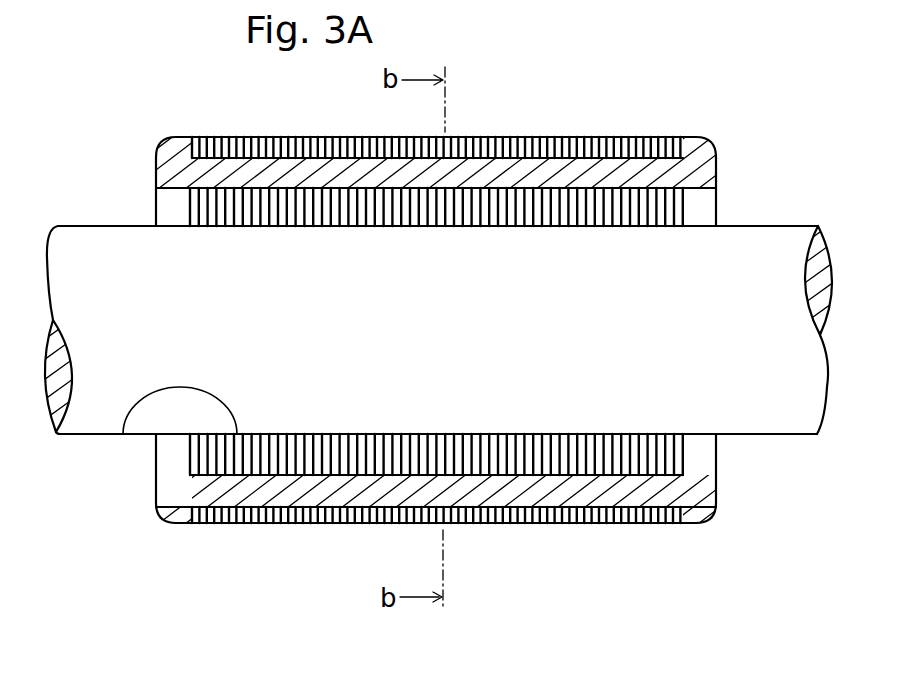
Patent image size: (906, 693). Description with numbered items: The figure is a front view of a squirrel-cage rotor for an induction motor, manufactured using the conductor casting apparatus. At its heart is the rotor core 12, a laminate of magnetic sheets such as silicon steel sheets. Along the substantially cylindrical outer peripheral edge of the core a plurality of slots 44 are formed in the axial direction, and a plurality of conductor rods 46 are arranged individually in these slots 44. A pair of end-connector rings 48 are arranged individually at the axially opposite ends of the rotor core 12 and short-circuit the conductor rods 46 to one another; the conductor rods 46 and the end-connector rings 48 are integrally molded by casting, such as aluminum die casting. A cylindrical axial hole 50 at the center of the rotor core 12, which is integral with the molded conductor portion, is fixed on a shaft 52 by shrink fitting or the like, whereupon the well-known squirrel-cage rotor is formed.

The rotor core 12 is at (441, 325).
The slots 44 is at (605, 147).
The conductor rods 46 is at (283, 175).
The end-connector rings 48 is at (156, 162).
The cylindrical axial hole 50 is at (123, 434).
The shaft 52 is at (767, 436).